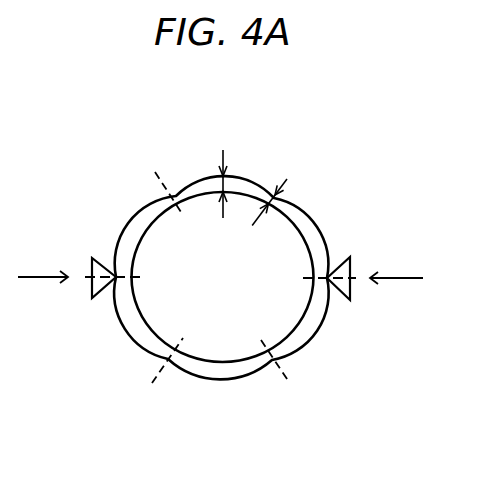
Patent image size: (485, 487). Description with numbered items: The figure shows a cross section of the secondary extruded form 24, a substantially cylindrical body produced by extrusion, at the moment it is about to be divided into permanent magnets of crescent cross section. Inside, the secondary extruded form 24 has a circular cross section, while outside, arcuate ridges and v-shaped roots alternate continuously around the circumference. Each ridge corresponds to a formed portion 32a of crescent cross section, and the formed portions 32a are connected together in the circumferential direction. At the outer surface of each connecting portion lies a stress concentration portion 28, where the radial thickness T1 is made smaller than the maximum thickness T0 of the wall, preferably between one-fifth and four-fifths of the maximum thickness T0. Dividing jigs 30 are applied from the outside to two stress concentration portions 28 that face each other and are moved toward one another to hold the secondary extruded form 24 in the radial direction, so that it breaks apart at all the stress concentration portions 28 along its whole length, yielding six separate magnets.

The secondary extruded form 24 is at (203, 380).
The stress concentration portion 28 is at (326, 272).
The dividing jig 30 is at (350, 289).
The formed portion 32a is at (122, 223).
The maximum thickness T0 is at (224, 184).
The thickness at stress concentration portion T1 is at (288, 188).